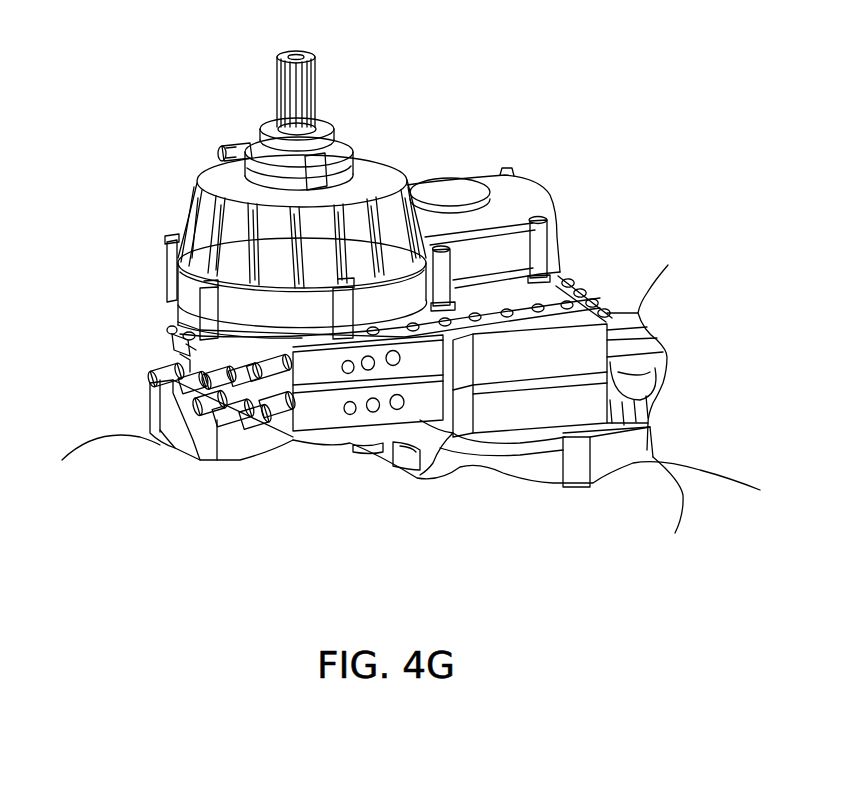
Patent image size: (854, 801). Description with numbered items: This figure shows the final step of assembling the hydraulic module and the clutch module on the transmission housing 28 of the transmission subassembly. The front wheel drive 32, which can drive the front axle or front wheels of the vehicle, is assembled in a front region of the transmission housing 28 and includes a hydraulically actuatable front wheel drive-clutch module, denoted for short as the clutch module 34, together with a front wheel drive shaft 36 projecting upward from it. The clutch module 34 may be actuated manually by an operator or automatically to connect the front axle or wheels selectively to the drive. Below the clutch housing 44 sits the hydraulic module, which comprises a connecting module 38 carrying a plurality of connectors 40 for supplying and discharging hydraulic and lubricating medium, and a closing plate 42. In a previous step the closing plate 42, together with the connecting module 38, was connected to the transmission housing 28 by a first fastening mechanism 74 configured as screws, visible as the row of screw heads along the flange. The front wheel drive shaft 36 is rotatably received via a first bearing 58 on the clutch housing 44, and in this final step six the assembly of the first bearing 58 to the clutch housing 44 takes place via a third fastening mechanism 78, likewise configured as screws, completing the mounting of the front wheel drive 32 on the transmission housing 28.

The transmission housing 28 is at (522, 478).
The front wheel drive 32 is at (555, 158).
The clutch module 34 is at (385, 133).
The front wheel drive shaft 36 is at (284, 100).
The connecting module 38 is at (669, 347).
The connectors 40 is at (138, 346).
The closing plate 42 is at (173, 320).
The clutch housing 44 is at (222, 185).
The first bearing 58 is at (242, 112).
The first fastening mechanism 74 is at (552, 298).
The third fastening mechanism 78 is at (330, 152).